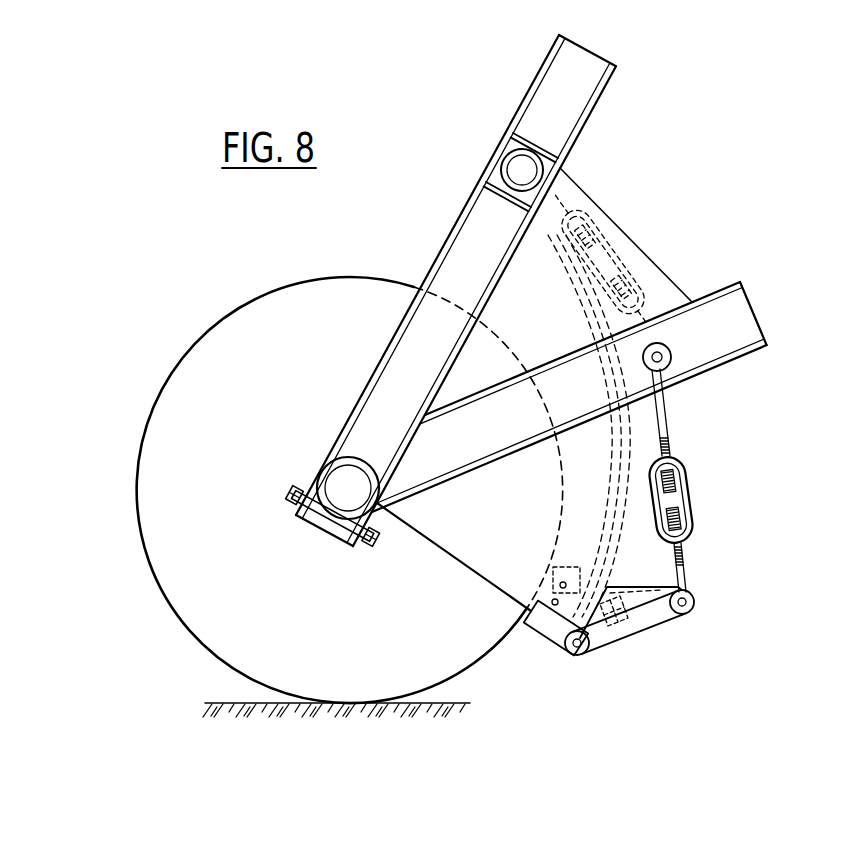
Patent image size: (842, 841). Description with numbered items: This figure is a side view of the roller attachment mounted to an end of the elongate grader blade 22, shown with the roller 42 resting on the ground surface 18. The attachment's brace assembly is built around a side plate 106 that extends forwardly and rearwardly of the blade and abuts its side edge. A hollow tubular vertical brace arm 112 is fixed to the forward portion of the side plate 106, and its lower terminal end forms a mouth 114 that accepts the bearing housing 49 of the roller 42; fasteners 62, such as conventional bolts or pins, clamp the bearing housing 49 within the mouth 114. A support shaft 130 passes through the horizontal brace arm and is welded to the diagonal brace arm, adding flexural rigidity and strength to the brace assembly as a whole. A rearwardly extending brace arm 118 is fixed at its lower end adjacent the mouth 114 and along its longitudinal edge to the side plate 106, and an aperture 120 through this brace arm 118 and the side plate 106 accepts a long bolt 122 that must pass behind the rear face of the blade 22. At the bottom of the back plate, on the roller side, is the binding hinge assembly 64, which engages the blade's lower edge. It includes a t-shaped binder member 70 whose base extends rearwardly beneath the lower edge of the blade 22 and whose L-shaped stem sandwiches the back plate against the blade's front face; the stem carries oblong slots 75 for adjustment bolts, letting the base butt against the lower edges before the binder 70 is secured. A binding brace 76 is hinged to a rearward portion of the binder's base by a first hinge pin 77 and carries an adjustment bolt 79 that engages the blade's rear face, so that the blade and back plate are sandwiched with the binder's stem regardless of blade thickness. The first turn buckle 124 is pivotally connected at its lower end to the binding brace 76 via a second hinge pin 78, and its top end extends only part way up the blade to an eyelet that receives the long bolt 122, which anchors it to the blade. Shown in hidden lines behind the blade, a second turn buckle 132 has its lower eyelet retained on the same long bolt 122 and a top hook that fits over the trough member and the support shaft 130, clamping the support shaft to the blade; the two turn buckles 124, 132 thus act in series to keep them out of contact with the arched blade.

The ground surface 18 is at (237, 703).
The grader blade 22 is at (607, 237).
The roller 42 is at (377, 671).
The bearing housing 49 is at (320, 514).
The fasteners 62 is at (345, 524).
The binding hinge assembly 64 is at (670, 647).
The binder member 70 is at (546, 642).
The oblong slots 75 is at (549, 599).
The binding brace 76 is at (690, 592).
The first hinge pin 77 is at (577, 656).
The second hinge pin 78 is at (690, 609).
The adjustment bolt 79 is at (633, 630).
The side plate 106 is at (437, 544).
The vertical brace arm 112 is at (443, 246).
The mouth 114 is at (316, 484).
The rearwardly extending brace arm 118 is at (745, 318).
The aperture 120 is at (670, 364).
The long bolt 122 is at (662, 368).
The first turn buckle 124 is at (690, 505).
The support shaft 130 is at (517, 164).
The second turn buckle 132 is at (636, 243).